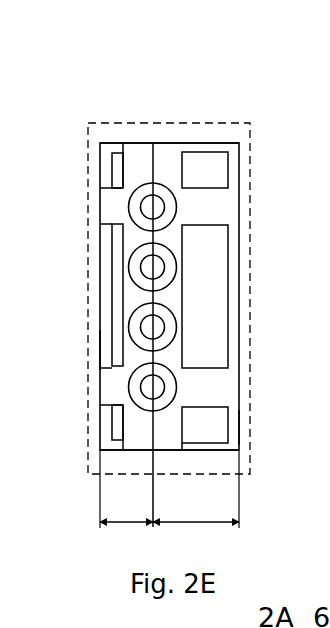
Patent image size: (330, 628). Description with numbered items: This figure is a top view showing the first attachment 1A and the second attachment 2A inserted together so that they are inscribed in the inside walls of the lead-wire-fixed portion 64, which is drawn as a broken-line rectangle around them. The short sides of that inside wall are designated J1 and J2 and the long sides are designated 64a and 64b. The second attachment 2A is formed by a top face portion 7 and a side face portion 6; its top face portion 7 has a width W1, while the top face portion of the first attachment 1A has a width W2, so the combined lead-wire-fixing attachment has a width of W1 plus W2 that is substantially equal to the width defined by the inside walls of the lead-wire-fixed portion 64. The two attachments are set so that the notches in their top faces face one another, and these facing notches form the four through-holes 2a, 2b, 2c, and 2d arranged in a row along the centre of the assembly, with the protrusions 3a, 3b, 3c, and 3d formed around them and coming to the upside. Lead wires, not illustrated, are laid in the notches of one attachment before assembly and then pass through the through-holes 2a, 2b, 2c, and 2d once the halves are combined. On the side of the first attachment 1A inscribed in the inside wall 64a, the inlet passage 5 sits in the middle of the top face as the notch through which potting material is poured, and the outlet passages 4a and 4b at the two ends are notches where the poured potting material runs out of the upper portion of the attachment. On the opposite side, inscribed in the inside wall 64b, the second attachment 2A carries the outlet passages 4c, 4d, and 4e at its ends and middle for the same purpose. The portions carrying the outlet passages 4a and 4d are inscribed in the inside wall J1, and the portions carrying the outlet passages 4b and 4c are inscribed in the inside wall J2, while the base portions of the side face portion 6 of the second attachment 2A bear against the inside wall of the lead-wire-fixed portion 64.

The first attachment 1A is at (206, 141).
The second attachment 2A is at (130, 141).
The through-hole 2a is at (174, 210).
The through-hole 2b is at (177, 262).
The through-hole 2c is at (177, 321).
The through-hole 2d is at (160, 385).
The protrusion 3a is at (162, 205).
The protrusion 3b is at (165, 270).
The protrusion 3c is at (165, 330).
The protrusion 3d is at (170, 390).
The outlet passage 4a is at (217, 170).
The outlet passage 4b is at (217, 430).
The outlet passage 4c is at (118, 418).
The outlet passage 4d is at (116, 170).
The outlet passage 4e is at (109, 280).
The inlet passage 5 is at (205, 243).
The side face portion 6 is at (98, 424).
The top face portion 7 is at (133, 452).
The lead-wire-fixed portion 64 is at (248, 120).
The inside wall 64a is at (240, 426).
The inside wall 64b is at (96, 350).
The inside wall J1 is at (155, 143).
The inside wall J2 is at (178, 452).
The width W1 is at (126, 506).
The width W2 is at (196, 506).